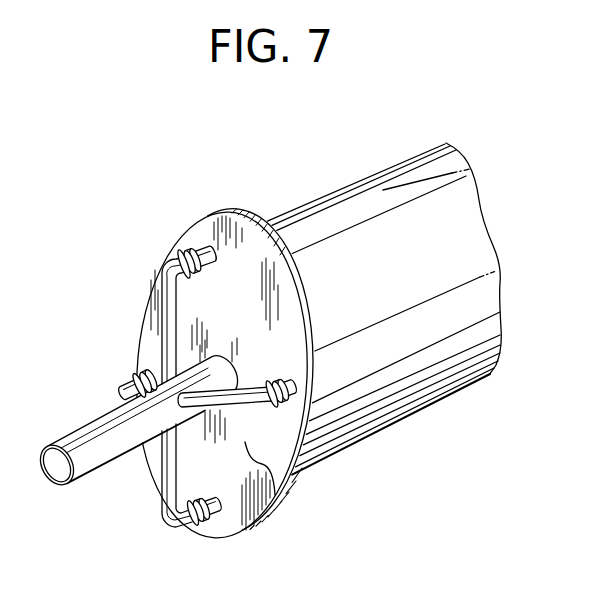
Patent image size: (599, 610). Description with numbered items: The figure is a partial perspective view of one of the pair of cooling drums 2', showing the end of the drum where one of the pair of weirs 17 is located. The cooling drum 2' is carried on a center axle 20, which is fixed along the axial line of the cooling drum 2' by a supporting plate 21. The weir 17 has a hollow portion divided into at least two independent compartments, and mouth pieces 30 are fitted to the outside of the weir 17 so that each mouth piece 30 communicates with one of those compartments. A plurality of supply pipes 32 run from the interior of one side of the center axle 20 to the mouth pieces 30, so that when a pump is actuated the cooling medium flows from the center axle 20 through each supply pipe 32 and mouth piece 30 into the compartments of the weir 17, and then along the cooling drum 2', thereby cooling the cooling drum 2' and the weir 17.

The cooling drum 2' is at (384, 279).
The weir 17 is at (228, 210).
The center axle 20 is at (93, 421).
The supporting plate 21 is at (286, 491).
The mouth piece 30 is at (191, 250).
The supply pipe 32 is at (177, 314).